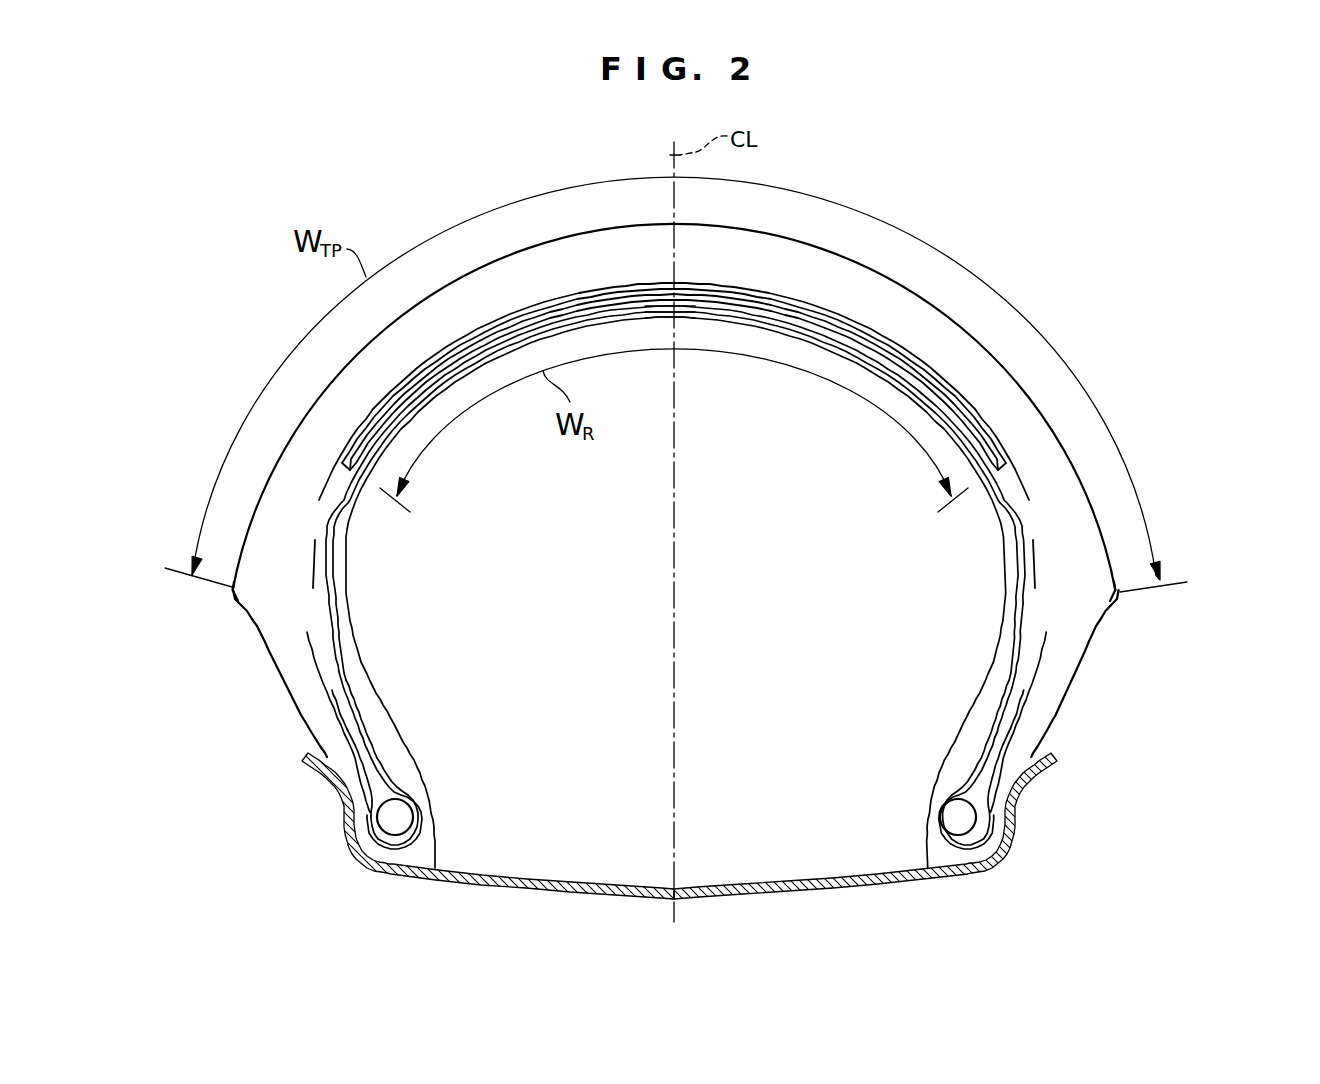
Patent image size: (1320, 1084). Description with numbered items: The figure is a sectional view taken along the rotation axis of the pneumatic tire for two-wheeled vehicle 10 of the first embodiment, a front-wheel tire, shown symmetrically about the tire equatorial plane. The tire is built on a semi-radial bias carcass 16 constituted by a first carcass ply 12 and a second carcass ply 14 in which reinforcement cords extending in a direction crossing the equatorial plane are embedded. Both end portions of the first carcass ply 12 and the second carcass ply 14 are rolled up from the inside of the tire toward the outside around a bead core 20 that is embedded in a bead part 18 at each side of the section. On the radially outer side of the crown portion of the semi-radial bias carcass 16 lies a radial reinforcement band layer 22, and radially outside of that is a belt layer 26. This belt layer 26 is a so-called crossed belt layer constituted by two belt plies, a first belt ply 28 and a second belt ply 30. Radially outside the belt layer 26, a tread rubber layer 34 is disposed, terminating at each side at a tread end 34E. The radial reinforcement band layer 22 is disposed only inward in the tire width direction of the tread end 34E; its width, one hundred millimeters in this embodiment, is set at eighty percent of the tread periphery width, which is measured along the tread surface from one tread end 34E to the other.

The pneumatic tire for two-wheeled vehicle 10 is at (982, 229).
The first carcass ply 12 is at (900, 650).
The second carcass ply 14 is at (1020, 650).
The semi-radial bias carcass 16 is at (681, 577).
The bead part 18 is at (958, 817).
The bead core 20 is at (928, 787).
The radial reinforcement band layer 22 is at (1000, 470).
The belt layer 26 is at (783, 435).
The first belt ply 28 is at (1040, 550).
The second belt ply 30 is at (1037, 492).
The tread rubber layer 34 is at (807, 247).
The tread end 34E is at (231, 593).